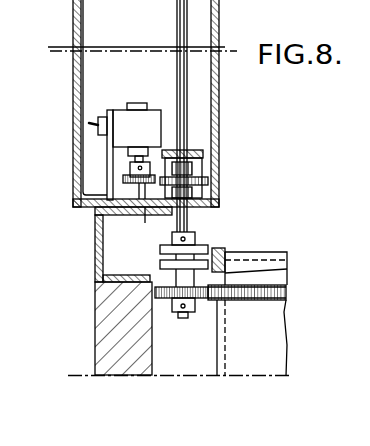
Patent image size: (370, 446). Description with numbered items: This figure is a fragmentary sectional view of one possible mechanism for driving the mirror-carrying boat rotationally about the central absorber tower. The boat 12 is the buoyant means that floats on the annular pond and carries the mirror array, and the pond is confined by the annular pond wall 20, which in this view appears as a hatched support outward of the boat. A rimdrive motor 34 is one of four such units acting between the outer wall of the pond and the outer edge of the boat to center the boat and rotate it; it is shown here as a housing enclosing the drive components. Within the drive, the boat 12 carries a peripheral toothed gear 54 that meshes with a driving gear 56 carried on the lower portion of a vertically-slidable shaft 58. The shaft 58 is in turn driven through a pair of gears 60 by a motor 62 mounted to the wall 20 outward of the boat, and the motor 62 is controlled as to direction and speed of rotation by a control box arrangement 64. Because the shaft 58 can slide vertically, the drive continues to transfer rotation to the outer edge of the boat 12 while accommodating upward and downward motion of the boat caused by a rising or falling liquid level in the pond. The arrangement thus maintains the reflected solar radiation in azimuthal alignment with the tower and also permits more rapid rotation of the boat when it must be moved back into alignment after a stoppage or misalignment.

The boat 12 is at (278, 342).
The pond wall 20 is at (108, 322).
The rimdrive motor 34 is at (72, 87).
The peripheral toothed gear 54 is at (253, 290).
The driving gear 56 is at (167, 298).
The vertically-slidable shaft 58 is at (187, 109).
The pair of gears 60 is at (163, 207).
The motor 62 is at (152, 118).
The control box arrangement 64 is at (99, 135).